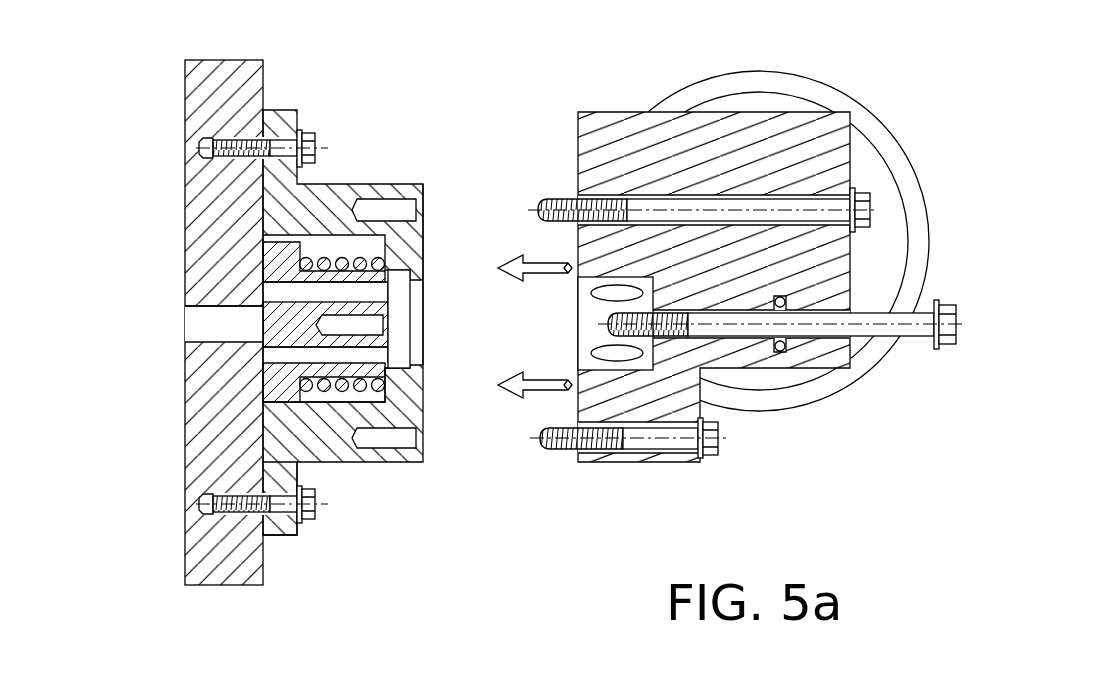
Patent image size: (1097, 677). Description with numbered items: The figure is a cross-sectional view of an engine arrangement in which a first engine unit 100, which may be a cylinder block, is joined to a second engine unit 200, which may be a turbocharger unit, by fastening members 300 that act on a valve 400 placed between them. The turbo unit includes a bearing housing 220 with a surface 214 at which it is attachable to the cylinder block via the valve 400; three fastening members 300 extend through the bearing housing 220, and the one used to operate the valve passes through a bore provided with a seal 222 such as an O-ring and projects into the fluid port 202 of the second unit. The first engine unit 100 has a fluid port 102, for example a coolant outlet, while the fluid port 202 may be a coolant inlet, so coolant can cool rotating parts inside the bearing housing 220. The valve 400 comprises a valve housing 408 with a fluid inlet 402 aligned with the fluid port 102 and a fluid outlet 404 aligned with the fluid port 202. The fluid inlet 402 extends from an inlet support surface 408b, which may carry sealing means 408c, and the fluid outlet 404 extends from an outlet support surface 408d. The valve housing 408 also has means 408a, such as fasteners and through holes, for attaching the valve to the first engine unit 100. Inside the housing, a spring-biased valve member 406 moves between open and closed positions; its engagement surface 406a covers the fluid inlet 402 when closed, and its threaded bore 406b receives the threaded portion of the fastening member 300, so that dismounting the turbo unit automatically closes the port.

The first engine unit 100 is at (184, 128).
The fluid port 102 is at (207, 332).
The second engine unit 200 is at (727, 245).
The fluid port 202 is at (607, 324).
The surface 214 is at (577, 165).
The bearing housing 220 is at (780, 145).
The seal 222 is at (784, 352).
The fastening member 300 is at (880, 330).
The valve 400 is at (292, 326).
The fluid inlet 402 is at (175, 308).
The fluid outlet 404 is at (428, 313).
The valve member 406 is at (282, 382).
The engagement surface 406a is at (262, 327).
The threaded bore 406b is at (405, 414).
The valve housing 408 is at (279, 309).
The means for attaching 408a is at (316, 148).
The inlet support surface 408b is at (262, 438).
The sealing means 408c is at (262, 460).
The outlet support surface 408d is at (445, 160).